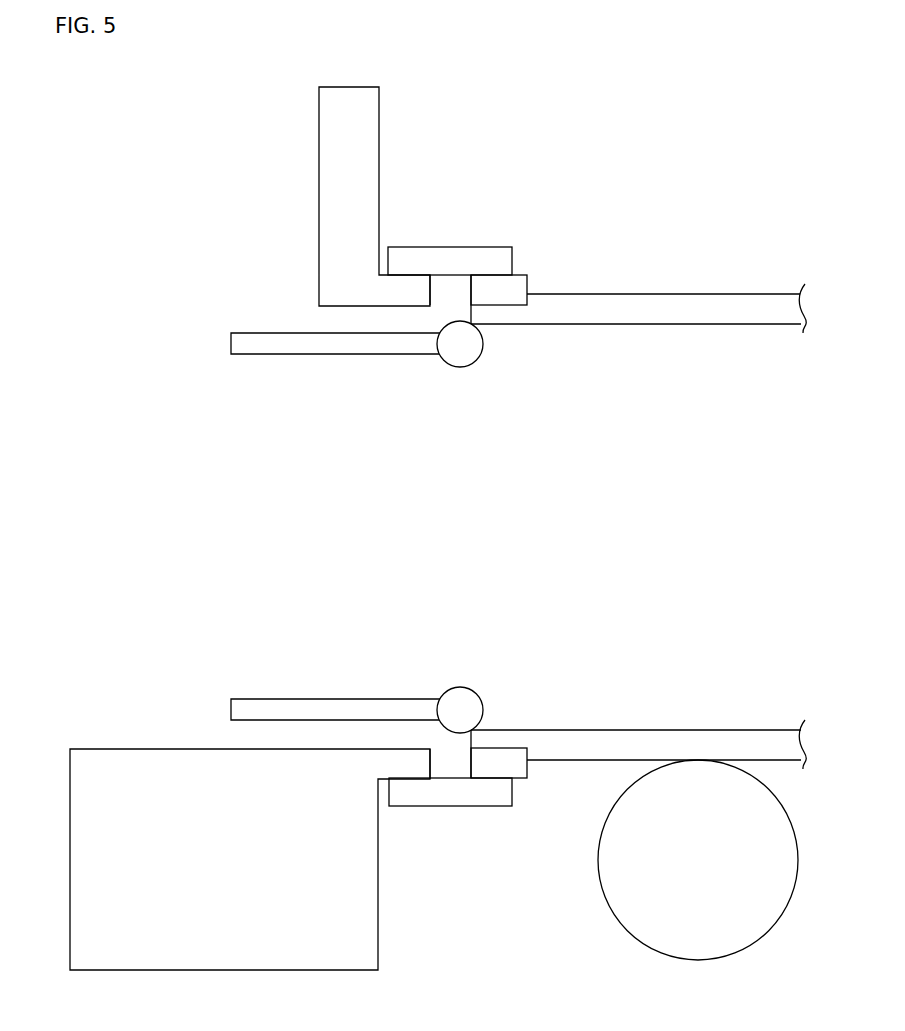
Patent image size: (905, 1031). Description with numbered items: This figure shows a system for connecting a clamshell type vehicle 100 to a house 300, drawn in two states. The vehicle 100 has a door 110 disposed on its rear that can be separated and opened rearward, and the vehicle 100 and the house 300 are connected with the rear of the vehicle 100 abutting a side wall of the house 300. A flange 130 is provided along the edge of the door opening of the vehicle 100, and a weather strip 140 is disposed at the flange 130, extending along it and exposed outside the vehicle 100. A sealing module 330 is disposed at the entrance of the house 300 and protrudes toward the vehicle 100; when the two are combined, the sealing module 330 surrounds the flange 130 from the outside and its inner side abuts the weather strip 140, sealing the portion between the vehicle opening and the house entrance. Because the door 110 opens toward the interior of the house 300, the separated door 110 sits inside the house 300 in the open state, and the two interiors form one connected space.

The vehicle 100 is at (748, 254).
The door 110 is at (302, 348).
The flange 130 is at (510, 317).
The weather strip 140 is at (521, 277).
The house 300 is at (327, 163).
The sealing module 330 is at (457, 252).